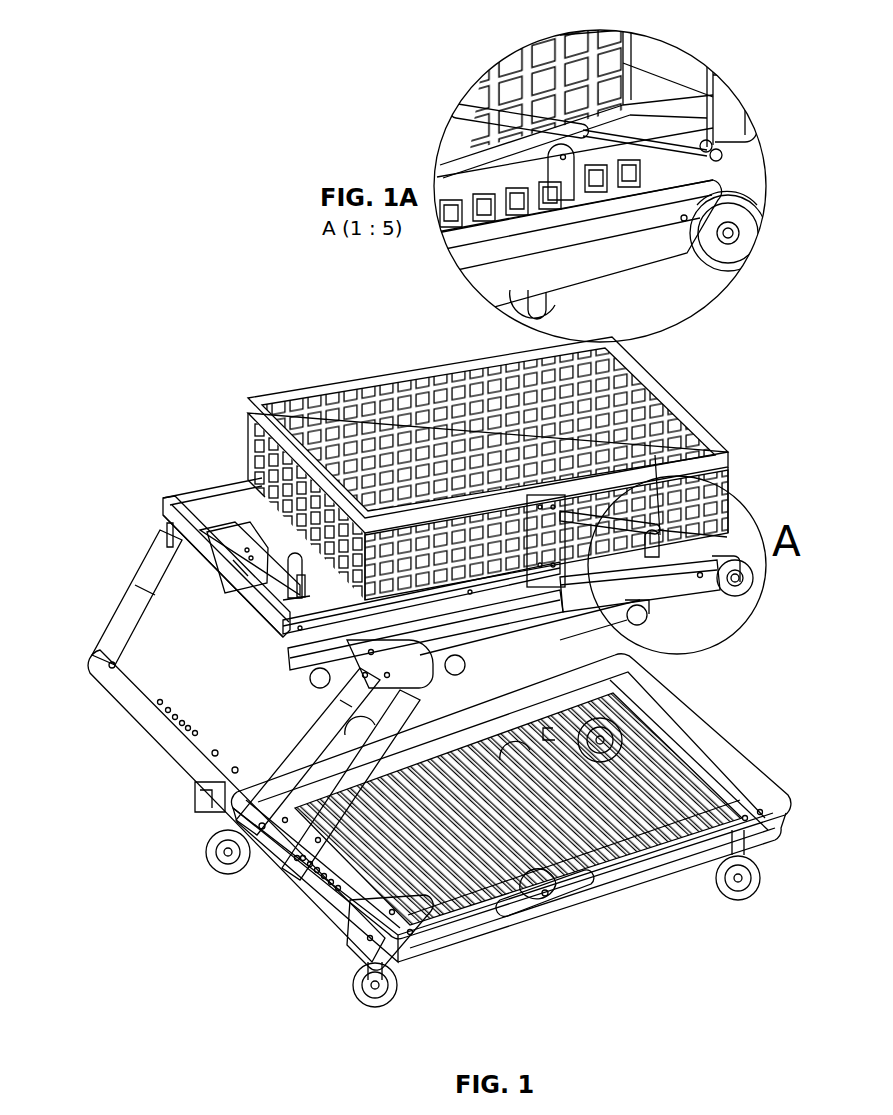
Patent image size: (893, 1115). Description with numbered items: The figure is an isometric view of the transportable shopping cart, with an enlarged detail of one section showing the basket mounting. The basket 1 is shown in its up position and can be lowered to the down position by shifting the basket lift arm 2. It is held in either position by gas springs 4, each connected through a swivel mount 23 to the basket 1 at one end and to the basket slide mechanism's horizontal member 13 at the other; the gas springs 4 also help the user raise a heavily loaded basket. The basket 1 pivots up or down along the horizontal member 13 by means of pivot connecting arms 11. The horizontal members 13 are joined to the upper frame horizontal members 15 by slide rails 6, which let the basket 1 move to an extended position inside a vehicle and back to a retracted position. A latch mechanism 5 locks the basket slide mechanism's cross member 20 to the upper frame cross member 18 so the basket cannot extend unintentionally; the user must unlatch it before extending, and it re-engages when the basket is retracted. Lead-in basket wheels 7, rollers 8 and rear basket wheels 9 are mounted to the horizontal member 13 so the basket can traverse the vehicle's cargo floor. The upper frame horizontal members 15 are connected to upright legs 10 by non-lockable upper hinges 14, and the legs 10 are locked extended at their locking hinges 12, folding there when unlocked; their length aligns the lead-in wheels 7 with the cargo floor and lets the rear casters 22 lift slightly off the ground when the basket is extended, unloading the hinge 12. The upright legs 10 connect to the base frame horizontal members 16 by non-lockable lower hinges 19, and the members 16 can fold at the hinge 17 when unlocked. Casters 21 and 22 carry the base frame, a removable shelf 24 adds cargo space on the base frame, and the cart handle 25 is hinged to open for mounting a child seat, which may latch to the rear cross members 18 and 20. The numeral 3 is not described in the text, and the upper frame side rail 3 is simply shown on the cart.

In FIG. 1, the basket 1 is at (413, 385).
In FIG. 1, the basket lift arm 2 is at (640, 622).
In FIG. 1, the upper frame side rail 3 is at (217, 567).
In FIG. 1A, the gas springs 4 is at (495, 118).
In FIG. 1, the latch mechanism 5 is at (295, 582).
In FIG. 1A, the slide rails 6 is at (708, 146).
In FIG. 1A, the lead-in basket wheels 7 is at (728, 268).
In FIG. 1, the rollers 8 is at (652, 600).
In FIG. 1, the rear basket wheels 9 is at (305, 682).
In FIG. 1, the upright legs 10 is at (317, 873).
In FIG. 1A, the pivot connecting arms 11 is at (563, 178).
In FIG. 1, the locking hinges 12 is at (267, 823).
In FIG. 1A, the basket slide mechanism's horizontal member 13 is at (722, 170).
In FIG. 1, the upper hinges 14 is at (367, 675).
In FIG. 1, the upper frame horizontal members 15 is at (685, 584).
In FIG. 1, the base frame horizontal members 16 is at (643, 868).
In FIG. 1, the hinge 17 is at (545, 897).
In FIG. 1, the upper frame cross member 18 is at (258, 525).
In FIG. 1, the lower hinges 19 is at (387, 942).
In FIG. 1, the basket slide mechanism's cross member 20 is at (170, 498).
In FIG. 1, the casters 21 is at (757, 887).
In FIG. 1, the rear casters 22 is at (354, 980).
In FIG. 1, the swivel mounts 23 is at (667, 435).
In FIG. 1, the removable shelf 24 is at (657, 810).
In FIG. 1, the cart handle 25 is at (290, 647).